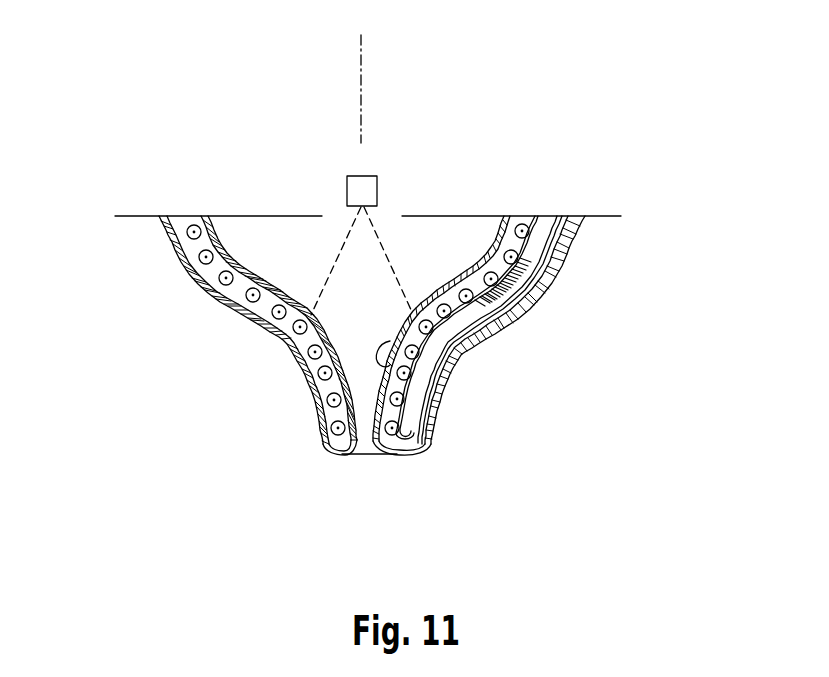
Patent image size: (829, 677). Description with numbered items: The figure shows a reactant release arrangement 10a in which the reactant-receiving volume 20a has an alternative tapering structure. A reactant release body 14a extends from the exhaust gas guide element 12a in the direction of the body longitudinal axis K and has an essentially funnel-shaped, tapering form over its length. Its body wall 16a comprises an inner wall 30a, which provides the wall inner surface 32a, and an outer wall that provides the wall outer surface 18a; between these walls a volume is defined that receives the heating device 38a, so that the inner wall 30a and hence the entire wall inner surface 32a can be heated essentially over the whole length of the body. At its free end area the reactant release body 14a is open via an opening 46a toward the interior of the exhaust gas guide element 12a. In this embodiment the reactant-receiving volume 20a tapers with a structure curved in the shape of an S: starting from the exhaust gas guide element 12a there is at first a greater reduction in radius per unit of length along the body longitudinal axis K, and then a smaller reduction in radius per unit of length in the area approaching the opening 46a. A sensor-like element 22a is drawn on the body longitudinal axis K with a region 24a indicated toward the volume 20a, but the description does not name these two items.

The reactant release arrangement 10a is at (403, 302).
The exhaust gas guide element 12a is at (621, 216).
The reactant release body 14a is at (190, 381).
The body wall 16a is at (493, 335).
The wall outer surface 18a is at (232, 305).
The reactant-receiving volume 20a is at (437, 243).
The sensor 22a is at (370, 175).
The detection region 24a is at (333, 262).
The inner wall 30a is at (393, 370).
The wall inner surface 32a is at (300, 347).
The heating device 38a is at (483, 290).
The opening 46a is at (373, 460).
The body longitudinal axis K is at (362, 60).